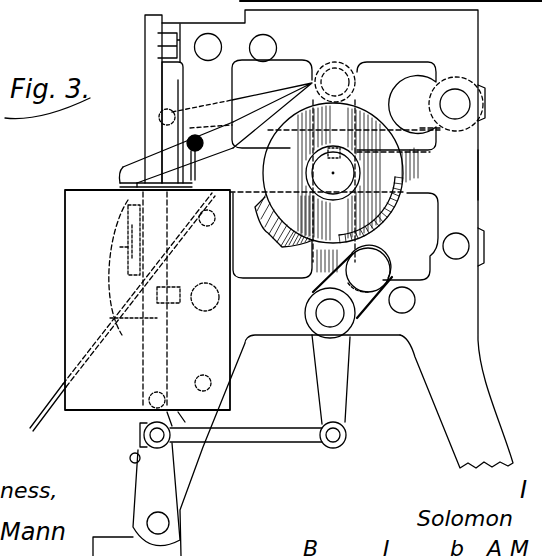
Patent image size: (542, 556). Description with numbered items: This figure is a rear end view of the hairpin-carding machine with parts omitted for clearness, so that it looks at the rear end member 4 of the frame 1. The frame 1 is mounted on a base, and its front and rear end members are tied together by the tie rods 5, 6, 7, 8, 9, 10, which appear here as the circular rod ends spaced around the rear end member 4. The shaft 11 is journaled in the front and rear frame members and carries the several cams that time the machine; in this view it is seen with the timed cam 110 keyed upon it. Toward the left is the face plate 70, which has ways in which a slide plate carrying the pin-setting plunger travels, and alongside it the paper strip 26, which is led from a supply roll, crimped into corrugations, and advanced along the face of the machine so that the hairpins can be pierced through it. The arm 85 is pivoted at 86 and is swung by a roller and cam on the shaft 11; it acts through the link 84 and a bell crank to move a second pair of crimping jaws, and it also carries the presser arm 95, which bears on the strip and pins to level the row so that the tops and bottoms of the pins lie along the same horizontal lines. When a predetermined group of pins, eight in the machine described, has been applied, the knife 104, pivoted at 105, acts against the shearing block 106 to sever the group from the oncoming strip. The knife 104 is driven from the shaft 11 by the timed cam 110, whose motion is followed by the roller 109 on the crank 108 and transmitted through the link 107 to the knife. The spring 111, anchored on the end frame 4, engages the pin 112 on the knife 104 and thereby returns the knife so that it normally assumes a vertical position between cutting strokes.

The frame 1 is at (478, 163).
The rear end member 4 is at (478, 189).
The tie rod 5 is at (454, 89).
The tie rod 6 is at (271, 41).
The tie rod 7 is at (208, 33).
The tie rod 8 is at (222, 298).
The tie rod 9 is at (415, 303).
The tie rod 10 is at (457, 259).
The shaft 11 is at (356, 169).
The paper strip 26 is at (135, 282).
The face plate 70 is at (145, 23).
The link 84 is at (167, 138).
The arm 85 is at (247, 101).
The pivot 86 is at (474, 82).
The presser arm 95 is at (128, 165).
The knife 104 is at (147, 260).
The pivot 105 is at (163, 523).
The shearing block 106 is at (147, 248).
The link 107 is at (246, 440).
The crank 108 is at (350, 428).
The roller 109 is at (391, 272).
The timed cam 110 is at (243, 221).
The spring 111 is at (143, 426).
The pin 112 is at (170, 403).